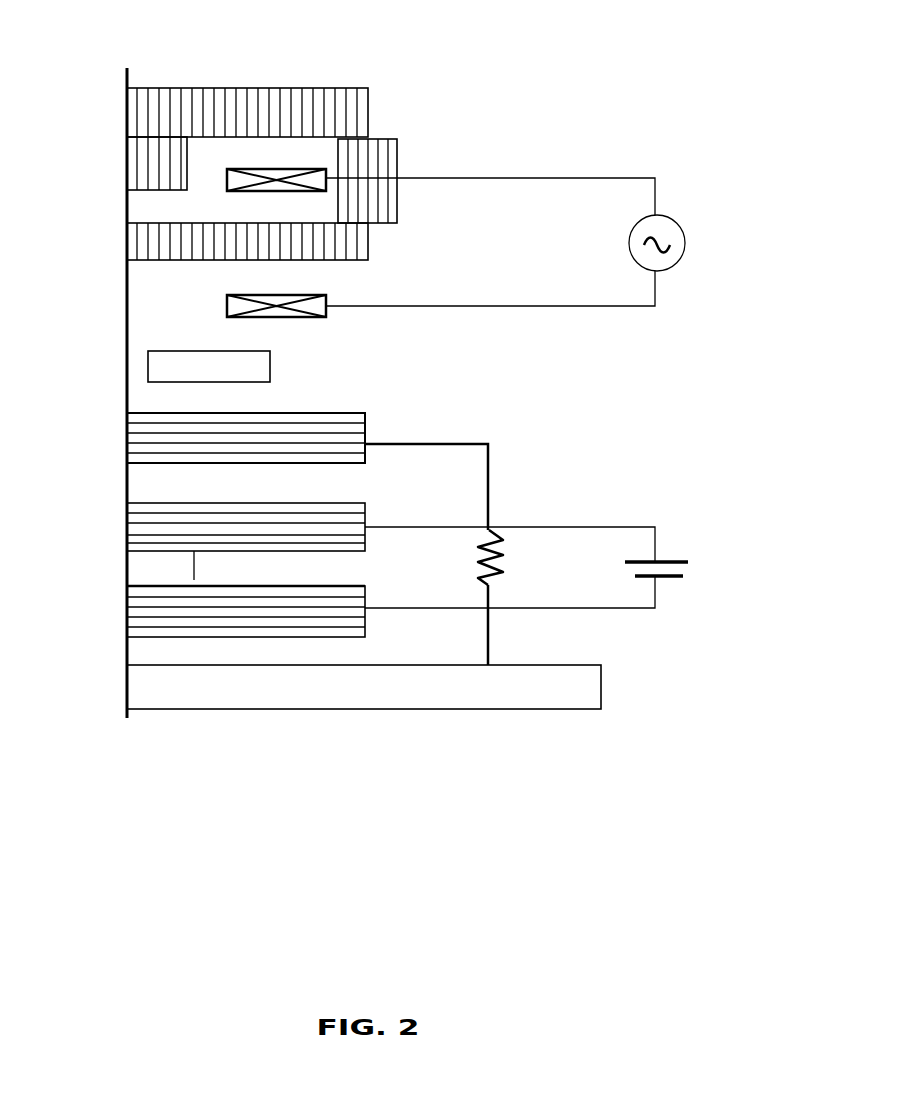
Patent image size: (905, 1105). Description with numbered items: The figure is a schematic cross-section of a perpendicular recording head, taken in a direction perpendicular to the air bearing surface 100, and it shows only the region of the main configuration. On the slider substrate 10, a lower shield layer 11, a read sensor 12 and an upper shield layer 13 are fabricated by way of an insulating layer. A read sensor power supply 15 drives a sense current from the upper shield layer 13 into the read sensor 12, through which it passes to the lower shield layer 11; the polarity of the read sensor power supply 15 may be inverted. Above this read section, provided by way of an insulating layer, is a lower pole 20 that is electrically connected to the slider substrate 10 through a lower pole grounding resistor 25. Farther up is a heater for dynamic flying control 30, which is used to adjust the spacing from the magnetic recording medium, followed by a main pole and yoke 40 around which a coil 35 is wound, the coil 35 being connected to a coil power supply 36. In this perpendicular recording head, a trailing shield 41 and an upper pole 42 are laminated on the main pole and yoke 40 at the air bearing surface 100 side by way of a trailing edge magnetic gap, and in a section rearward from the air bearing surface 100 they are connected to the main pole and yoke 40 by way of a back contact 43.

The air bearing surface 100 is at (127, 63).
The slider substrate 10 is at (137, 687).
The lower shield layer 11 is at (137, 613).
The read sensor 12 is at (135, 567).
The upper shield layer 13 is at (140, 517).
The read sensor power supply 15 is at (688, 565).
The lower pole 20 is at (142, 439).
The lower pole grounding resistor 25 is at (515, 558).
The heater for dynamic flying control 30 is at (162, 365).
The coil 35 is at (327, 190).
The coil power supply 36 is at (697, 247).
The main pole and yoke 40 is at (157, 237).
The trailing shield 41 is at (140, 165).
The upper pole 42 is at (142, 110).
The back contact 43 is at (383, 154).